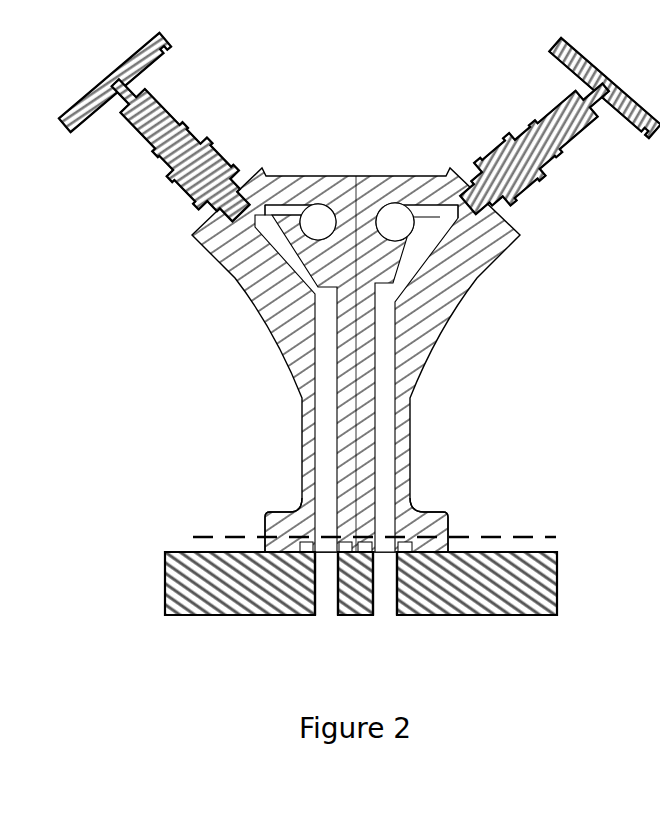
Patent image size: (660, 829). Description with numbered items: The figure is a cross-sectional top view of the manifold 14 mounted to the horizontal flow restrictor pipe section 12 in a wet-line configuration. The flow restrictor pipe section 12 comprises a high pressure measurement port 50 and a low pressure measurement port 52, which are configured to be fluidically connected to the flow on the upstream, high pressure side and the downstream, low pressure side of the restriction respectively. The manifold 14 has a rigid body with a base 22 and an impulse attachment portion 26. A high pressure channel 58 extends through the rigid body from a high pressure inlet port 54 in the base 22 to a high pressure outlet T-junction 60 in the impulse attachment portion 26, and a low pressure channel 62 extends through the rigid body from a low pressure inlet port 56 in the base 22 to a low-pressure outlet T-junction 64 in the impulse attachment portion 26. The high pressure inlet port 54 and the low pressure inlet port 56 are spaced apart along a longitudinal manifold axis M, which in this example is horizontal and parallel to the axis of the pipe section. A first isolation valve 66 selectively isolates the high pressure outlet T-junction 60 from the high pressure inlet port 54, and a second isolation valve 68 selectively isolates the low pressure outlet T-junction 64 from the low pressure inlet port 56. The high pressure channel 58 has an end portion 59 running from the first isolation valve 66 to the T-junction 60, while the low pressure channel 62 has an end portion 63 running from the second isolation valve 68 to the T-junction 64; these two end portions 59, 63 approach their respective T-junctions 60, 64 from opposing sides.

The flow restrictor pipe section 12 is at (180, 572).
The manifold 14 is at (140, 323).
The base 22 is at (428, 512).
The impulse attachment portion 26 is at (447, 275).
The high pressure measurement port 50 is at (386, 617).
The low pressure measurement port 52 is at (324, 618).
The high pressure inlet port 54 is at (385, 552).
The low pressure inlet port 56 is at (325, 548).
The high pressure channel 58 is at (387, 440).
The end portion 59 is at (423, 205).
The high pressure outlet T-junction 60 is at (395, 205).
The low pressure channel 62 is at (330, 402).
The end portion 63 is at (283, 204).
The low pressure outlet T-junction 64 is at (317, 205).
The first isolation valve 66 is at (537, 173).
The second isolation valve 68 is at (190, 157).
The longitudinal manifold axis M is at (192, 537).